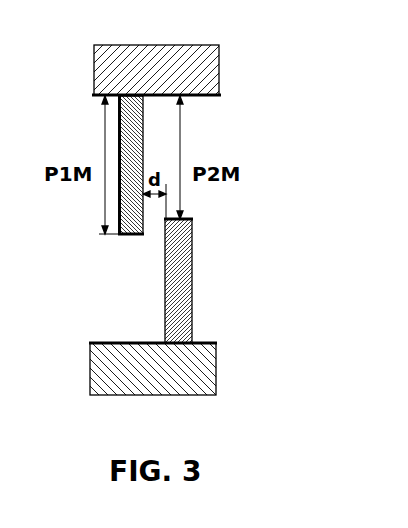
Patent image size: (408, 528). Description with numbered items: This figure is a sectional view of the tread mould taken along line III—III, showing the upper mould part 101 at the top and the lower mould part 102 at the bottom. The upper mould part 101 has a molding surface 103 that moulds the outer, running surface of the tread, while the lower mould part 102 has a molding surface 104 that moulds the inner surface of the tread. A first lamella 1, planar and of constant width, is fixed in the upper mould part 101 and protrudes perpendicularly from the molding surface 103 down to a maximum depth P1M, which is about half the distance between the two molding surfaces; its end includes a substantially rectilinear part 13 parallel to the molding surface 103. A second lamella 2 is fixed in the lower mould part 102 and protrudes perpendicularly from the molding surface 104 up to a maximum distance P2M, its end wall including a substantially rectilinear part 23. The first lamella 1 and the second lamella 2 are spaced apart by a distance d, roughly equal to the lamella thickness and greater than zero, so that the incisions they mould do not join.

The upper mould part 101 is at (211, 70).
The molding surface of the upper mould part 103 is at (197, 97).
The first lamella 1 is at (118, 132).
The rectilinear part of the end part of the first lamella 13 is at (133, 235).
The second lamella 2 is at (190, 285).
The rectilinear part of the end wall of the second lamella 23 is at (187, 216).
The molding surface of the lower mould part 104 is at (205, 343).
The lower mould part 102 is at (195, 375).